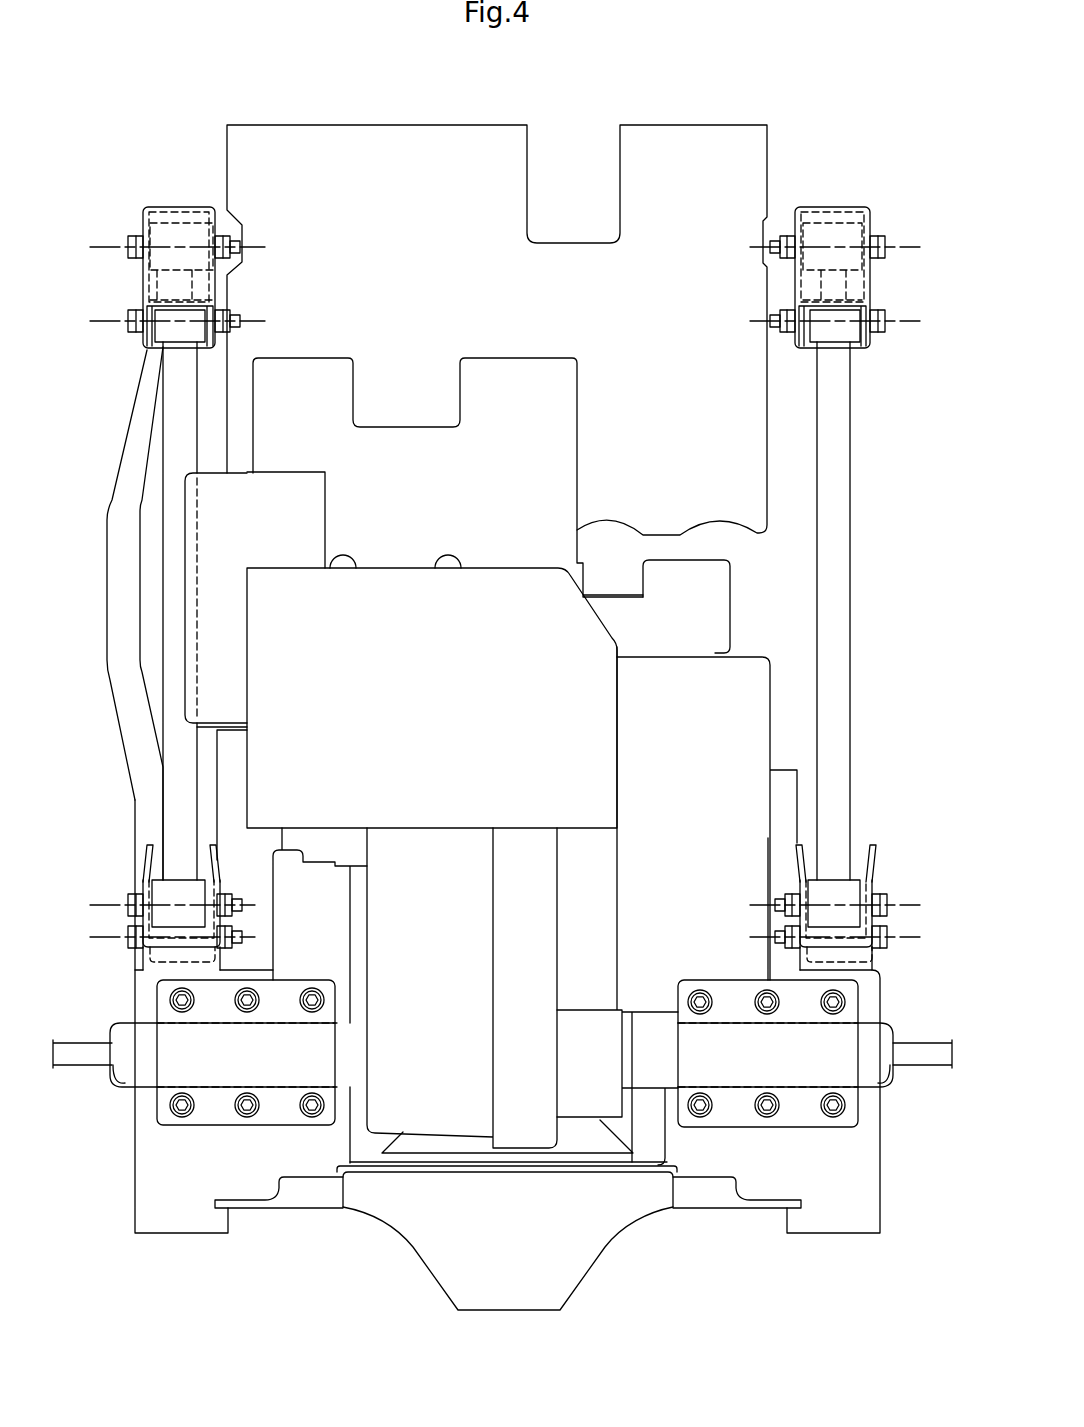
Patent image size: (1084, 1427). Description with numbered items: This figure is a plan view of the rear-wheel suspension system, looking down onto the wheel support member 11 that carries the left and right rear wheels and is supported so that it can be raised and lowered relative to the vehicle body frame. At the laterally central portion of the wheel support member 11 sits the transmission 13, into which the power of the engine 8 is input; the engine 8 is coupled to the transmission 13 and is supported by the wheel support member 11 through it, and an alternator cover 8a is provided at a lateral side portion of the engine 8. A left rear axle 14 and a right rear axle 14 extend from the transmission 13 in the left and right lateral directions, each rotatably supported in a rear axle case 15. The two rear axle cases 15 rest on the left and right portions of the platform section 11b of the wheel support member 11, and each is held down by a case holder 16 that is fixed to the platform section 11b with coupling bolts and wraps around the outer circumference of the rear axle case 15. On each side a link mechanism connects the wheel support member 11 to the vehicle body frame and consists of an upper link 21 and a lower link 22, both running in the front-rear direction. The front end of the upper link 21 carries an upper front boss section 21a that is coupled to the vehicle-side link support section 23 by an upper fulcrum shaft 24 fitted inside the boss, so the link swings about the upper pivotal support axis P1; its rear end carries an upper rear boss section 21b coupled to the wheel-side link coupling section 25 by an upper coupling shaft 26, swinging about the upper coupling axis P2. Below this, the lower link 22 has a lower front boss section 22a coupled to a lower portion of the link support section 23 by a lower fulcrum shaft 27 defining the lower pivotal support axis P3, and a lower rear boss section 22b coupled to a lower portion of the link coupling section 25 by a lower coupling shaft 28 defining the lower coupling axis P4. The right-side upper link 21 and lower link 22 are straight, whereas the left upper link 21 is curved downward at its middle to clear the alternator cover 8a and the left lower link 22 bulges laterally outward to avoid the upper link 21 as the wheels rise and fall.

The engine 8 is at (405, 554).
The alternator cover 8a is at (190, 558).
The wheel support member 11 is at (508, 1234).
The platform section 11b is at (293, 1143).
The transmission 13 is at (458, 1120).
The rear axle 14 is at (77, 1060).
The rear axle case 15 is at (148, 1080).
The case holder 16 is at (208, 1067).
The upper link 21 is at (180, 442).
The upper front boss section 21a is at (182, 335).
The upper rear boss section 21b is at (178, 888).
The lower link 22 is at (128, 737).
The lower front boss section 22a is at (190, 210).
The lower rear boss section 22b is at (203, 975).
The link support section 23 is at (163, 210).
The upper fulcrum shaft 24 is at (135, 308).
The link coupling section 25 is at (143, 962).
The upper coupling shaft 26 is at (136, 888).
The lower fulcrum shaft 27 is at (134, 236).
The lower coupling shaft 28 is at (140, 946).
The upper pivotal support axis P1 is at (502, 321).
The upper coupling axis P2 is at (502, 905).
The lower pivotal support axis P3 is at (502, 247).
The lower coupling axis P4 is at (502, 937).